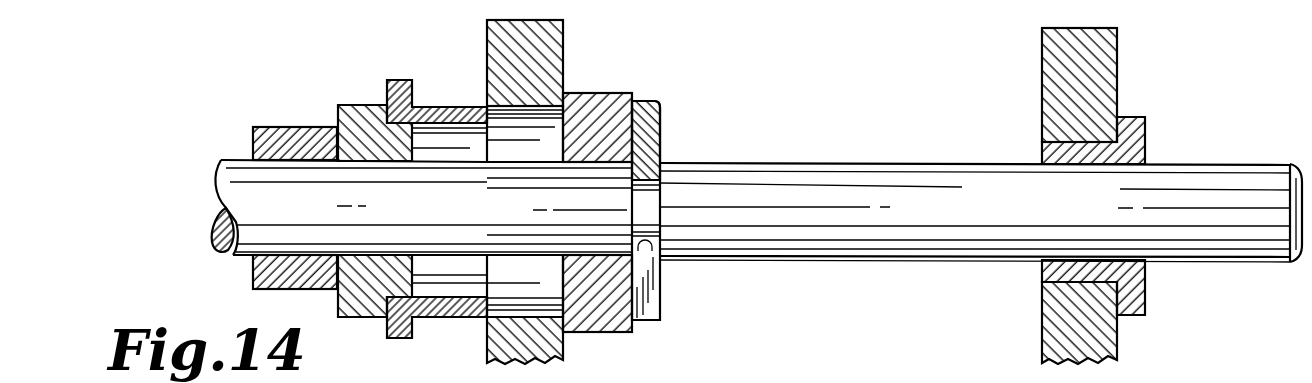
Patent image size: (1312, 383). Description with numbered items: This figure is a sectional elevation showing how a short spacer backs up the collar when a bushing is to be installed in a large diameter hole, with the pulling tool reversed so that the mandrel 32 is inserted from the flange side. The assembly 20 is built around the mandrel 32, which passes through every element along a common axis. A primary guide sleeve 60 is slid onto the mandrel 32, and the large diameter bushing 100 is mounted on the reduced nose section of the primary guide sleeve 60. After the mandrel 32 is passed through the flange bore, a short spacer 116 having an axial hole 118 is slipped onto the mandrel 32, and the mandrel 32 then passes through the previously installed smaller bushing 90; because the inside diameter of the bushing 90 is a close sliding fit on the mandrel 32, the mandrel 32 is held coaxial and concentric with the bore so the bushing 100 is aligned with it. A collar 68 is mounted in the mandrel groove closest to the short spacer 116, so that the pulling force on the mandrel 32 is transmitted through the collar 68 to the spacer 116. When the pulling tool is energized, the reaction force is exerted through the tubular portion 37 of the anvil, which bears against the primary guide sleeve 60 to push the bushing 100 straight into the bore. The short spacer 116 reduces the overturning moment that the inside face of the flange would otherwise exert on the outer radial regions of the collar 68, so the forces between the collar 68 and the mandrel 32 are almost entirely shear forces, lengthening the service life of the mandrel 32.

The shaft assembly 20 is at (851, 382).
The mandrel 32 is at (882, 168).
The tubular portion of the anvil 37 is at (280, 127).
The primary guide sleeve 60 is at (357, 105).
The collar 68 is at (648, 102).
The bushing 90 is at (1143, 293).
The bushing 100 is at (441, 98).
The short spacer 116 is at (589, 106).
The axial hole 118 is at (582, 250).